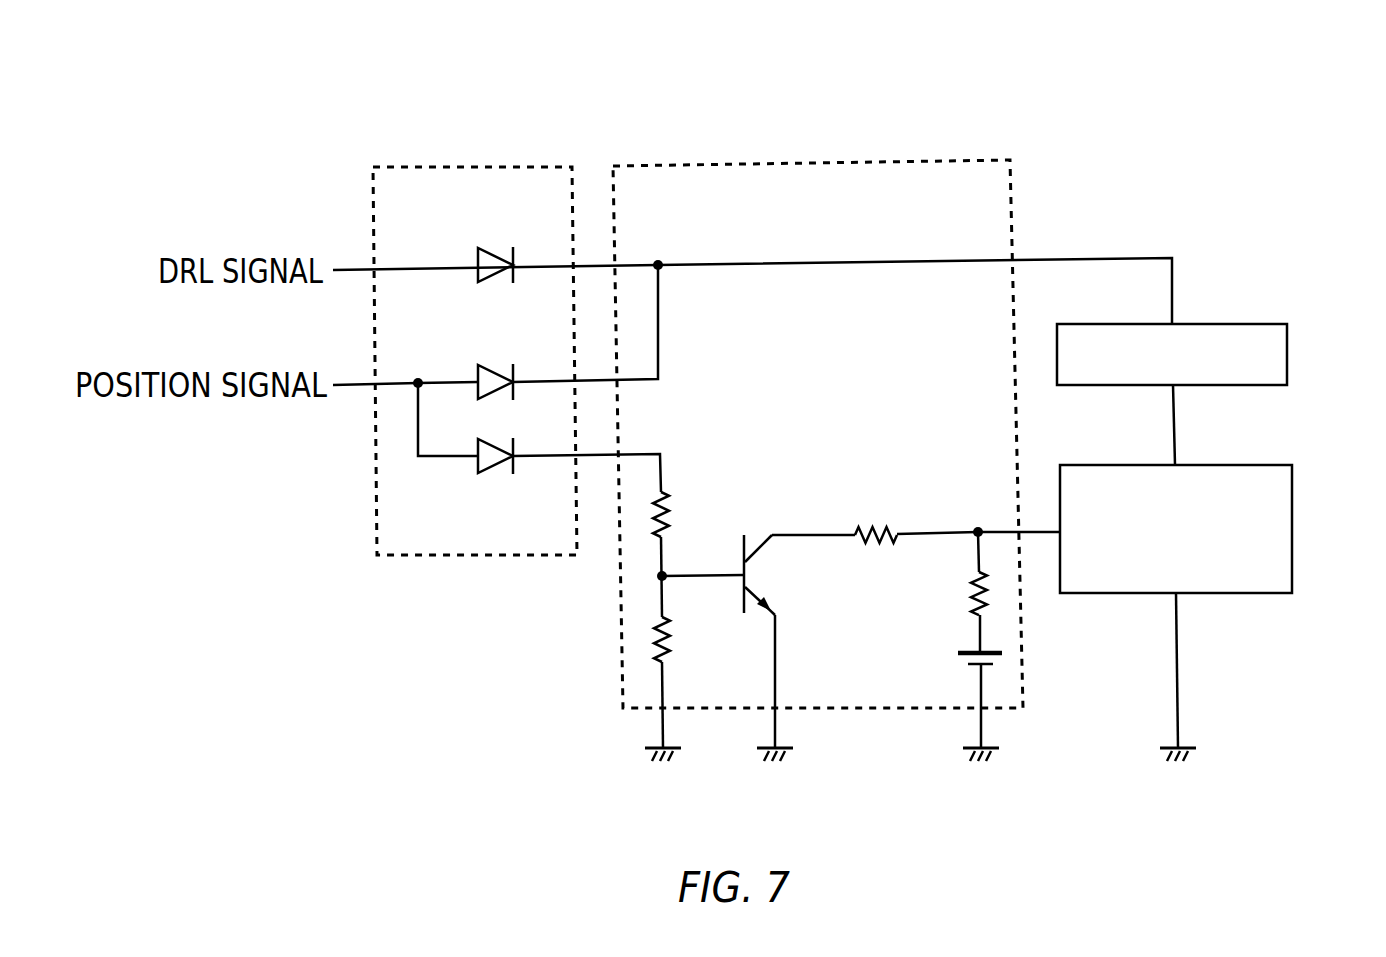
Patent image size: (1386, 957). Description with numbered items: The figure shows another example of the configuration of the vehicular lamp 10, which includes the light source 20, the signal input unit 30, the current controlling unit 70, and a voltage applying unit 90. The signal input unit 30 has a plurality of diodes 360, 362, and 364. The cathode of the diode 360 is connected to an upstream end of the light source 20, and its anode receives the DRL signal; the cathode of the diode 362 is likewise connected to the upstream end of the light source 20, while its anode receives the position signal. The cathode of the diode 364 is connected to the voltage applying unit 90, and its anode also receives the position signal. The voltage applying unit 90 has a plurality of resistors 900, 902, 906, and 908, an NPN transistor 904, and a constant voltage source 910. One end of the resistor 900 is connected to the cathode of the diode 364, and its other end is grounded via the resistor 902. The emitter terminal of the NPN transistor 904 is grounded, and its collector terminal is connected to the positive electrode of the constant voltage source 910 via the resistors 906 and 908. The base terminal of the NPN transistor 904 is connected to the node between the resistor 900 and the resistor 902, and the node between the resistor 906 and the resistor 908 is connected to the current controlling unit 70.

The vehicular lamp 10 is at (1265, 89).
The light source 20 is at (1288, 348).
The signal input unit 30 is at (472, 168).
The current controlling unit 70 is at (1293, 528).
The voltage applying unit 90 is at (812, 162).
The diode 360 is at (493, 249).
The diode 362 is at (493, 365).
The diode 364 is at (497, 473).
The resistor 900 is at (675, 514).
The resistor 902 is at (678, 637).
The NPN transistor 904 is at (768, 572).
The resistor 906 is at (875, 525).
The resistor 908 is at (967, 593).
The constant voltage source 910 is at (958, 665).